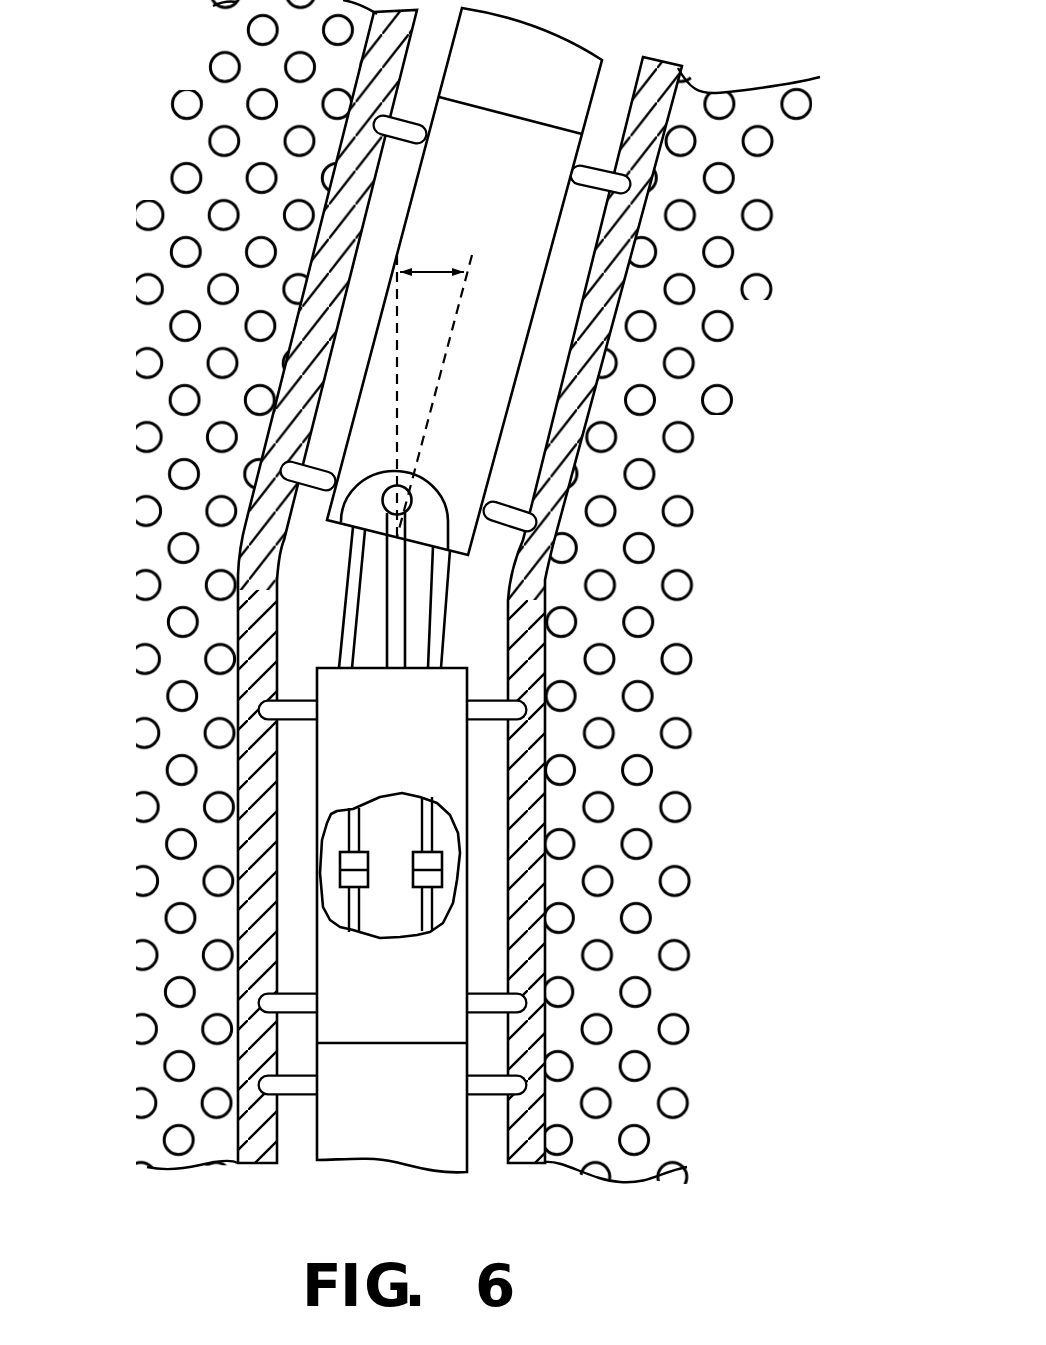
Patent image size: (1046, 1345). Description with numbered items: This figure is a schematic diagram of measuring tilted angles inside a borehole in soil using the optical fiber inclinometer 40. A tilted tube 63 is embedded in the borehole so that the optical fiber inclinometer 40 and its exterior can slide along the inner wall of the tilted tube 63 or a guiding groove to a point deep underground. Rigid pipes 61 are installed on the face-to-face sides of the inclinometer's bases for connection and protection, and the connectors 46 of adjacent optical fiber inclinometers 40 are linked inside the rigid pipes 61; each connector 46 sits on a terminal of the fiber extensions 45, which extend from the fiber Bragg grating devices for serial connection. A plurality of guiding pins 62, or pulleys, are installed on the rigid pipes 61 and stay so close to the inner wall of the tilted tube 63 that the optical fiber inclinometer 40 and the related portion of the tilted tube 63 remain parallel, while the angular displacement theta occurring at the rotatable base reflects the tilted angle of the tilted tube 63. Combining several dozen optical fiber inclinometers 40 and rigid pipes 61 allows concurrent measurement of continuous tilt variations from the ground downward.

The optical fiber inclinometer 40 is at (470, 622).
The fiber extensions 45 is at (347, 833).
The connector 46 is at (340, 880).
The rigid pipe 61 is at (503, 324).
The guiding pins 62 is at (617, 183).
The tilted tube 63 is at (660, 107).